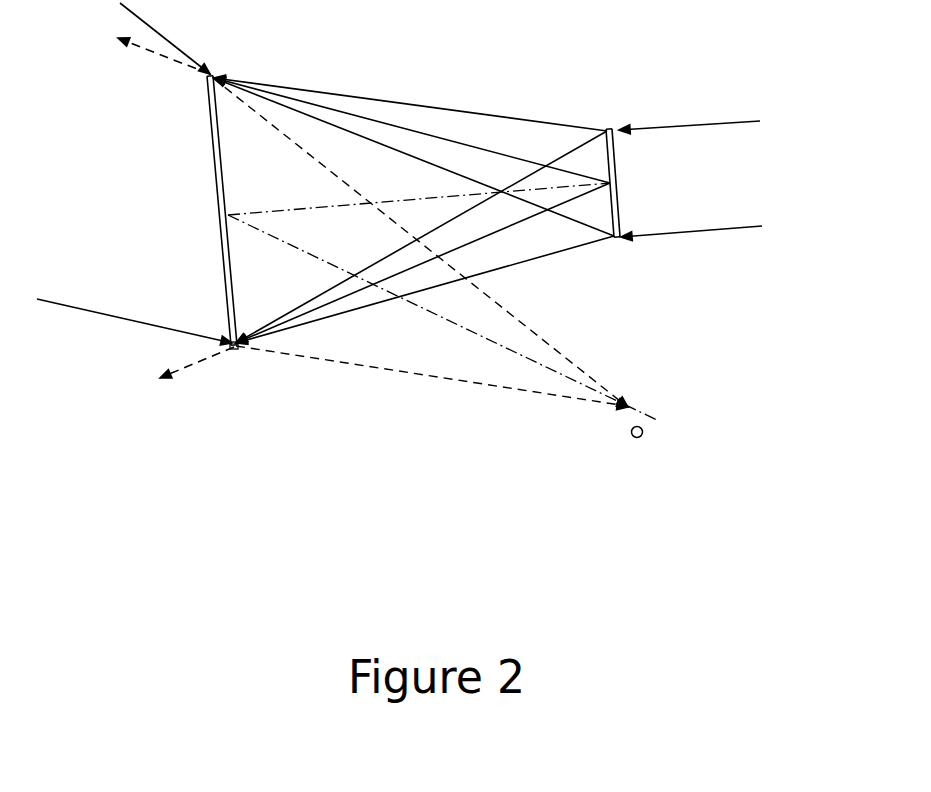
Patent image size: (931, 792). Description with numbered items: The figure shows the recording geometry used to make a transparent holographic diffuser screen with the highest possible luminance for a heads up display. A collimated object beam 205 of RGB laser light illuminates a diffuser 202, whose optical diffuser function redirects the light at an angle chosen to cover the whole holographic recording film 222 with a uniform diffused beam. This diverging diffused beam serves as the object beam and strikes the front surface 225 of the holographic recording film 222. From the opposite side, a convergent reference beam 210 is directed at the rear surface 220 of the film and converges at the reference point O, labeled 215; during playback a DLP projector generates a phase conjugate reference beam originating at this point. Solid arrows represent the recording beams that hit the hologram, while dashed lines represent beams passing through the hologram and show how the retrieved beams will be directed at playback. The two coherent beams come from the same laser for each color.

The diffuser 202 is at (615, 143).
The collimated object beam 205 is at (718, 115).
The convergent reference beam 210 is at (50, 297).
The reference point O 215 is at (672, 408).
The rear surface 220 is at (207, 88).
The holographic recording film 222 is at (238, 352).
The front surface 225 is at (225, 130).